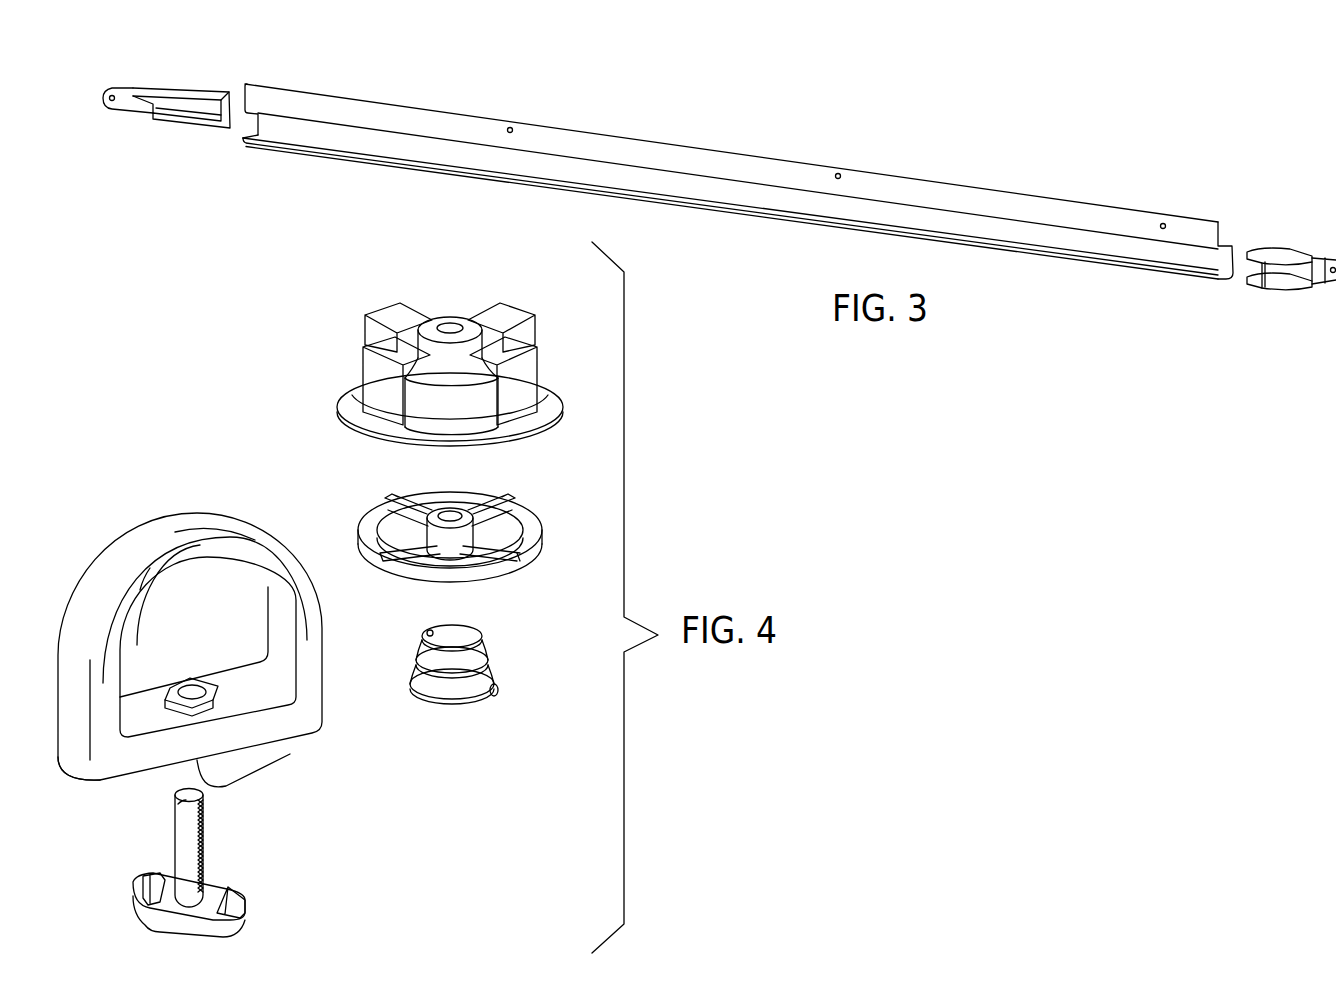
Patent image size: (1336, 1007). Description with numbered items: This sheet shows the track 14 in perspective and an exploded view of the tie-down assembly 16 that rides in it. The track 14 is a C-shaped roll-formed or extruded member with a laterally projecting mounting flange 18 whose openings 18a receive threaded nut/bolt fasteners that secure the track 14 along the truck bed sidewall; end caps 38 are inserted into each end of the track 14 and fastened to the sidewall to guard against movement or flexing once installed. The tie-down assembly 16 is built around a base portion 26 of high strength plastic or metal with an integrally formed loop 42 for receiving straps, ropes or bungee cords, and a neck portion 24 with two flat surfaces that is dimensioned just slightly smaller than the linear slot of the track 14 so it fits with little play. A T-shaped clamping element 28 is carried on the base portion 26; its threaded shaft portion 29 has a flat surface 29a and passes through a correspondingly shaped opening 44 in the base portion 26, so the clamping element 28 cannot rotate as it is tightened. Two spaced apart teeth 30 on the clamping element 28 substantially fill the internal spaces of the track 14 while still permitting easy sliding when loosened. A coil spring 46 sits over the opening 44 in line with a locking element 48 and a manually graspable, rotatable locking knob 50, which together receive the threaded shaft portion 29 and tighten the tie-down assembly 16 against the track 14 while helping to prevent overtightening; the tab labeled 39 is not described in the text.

In FIG. 3, the track 14 is at (1041, 123).
In FIG. 3, the mounting flange 18 is at (460, 128).
In FIG. 3, the openings 18a is at (855, 165).
In FIG. 3, the end caps 38 is at (133, 90).
In FIG. 4, the tie-down assembly 16 is at (244, 362).
In FIG. 4, the locking knob 50 is at (418, 325).
In FIG. 4, the locking element 48 is at (372, 525).
In FIG. 4, the coil spring 46 is at (503, 690).
In FIG. 4, the loop 42 is at (135, 555).
In FIG. 4, the opening 44 is at (205, 690).
In FIG. 4, the neck portion 24 is at (290, 754).
In FIG. 4, the base portion 26 is at (117, 777).
In FIG. 4, the shaft portion 29 is at (203, 808).
In FIG. 4, the flat surface 29a is at (198, 840).
In FIG. 4, the clamping element 28 is at (262, 921).
In FIG. 4, the teeth 30 is at (237, 893).
In FIG. 4, the tab 39 is at (167, 905).